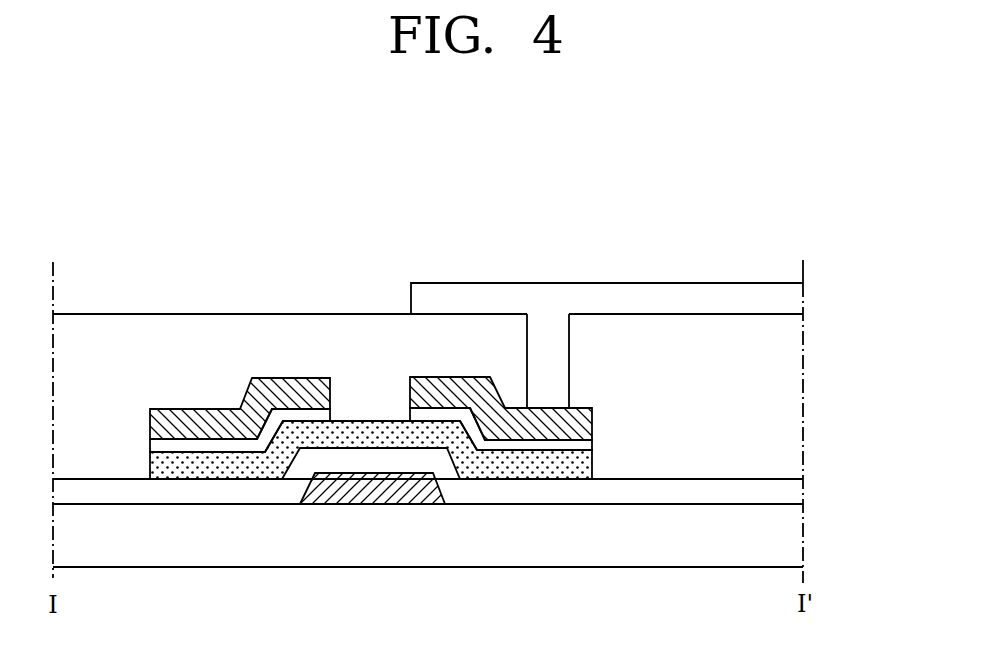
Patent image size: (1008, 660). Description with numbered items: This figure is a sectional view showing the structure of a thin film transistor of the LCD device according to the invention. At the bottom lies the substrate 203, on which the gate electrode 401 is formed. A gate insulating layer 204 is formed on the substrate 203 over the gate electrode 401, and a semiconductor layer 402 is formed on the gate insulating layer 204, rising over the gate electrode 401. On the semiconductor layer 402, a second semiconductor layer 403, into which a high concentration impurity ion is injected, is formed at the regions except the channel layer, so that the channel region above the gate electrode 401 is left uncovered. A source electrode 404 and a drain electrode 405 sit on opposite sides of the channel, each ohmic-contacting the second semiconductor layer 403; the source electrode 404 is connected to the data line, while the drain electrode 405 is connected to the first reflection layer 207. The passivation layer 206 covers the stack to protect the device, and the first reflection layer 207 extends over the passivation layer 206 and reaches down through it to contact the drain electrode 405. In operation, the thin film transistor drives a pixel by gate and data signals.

The substrate 203 is at (795, 538).
The gate insulating layer 204 is at (795, 492).
The passivation layer 206 is at (795, 400).
The first reflection layer 207 is at (795, 300).
The gate electrode 401 is at (373, 504).
The semiconductor layer 402 is at (495, 470).
The second semiconductor layer 403 is at (555, 445).
The source electrode 404 is at (302, 409).
The drain electrode 405 is at (465, 377).